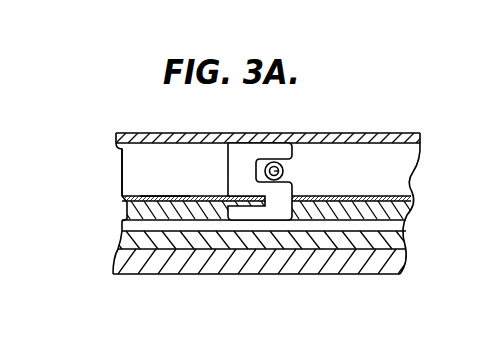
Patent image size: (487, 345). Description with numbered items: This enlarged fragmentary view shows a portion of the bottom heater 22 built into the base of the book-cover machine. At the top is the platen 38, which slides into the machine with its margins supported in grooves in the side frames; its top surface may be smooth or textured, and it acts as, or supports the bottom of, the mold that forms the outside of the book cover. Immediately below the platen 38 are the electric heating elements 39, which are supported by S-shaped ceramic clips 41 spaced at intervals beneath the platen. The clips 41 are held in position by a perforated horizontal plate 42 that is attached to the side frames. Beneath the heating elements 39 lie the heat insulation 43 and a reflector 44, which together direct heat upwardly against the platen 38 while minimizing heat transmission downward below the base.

The bottom heater 22 is at (114, 181).
The platen 38 is at (318, 141).
The electric heating elements 39 is at (283, 172).
The S-shaped ceramic clips 41 is at (228, 162).
The perforated horizontal plate 42 is at (212, 178).
The heat insulation 43 is at (136, 216).
The reflector 44 is at (170, 190).